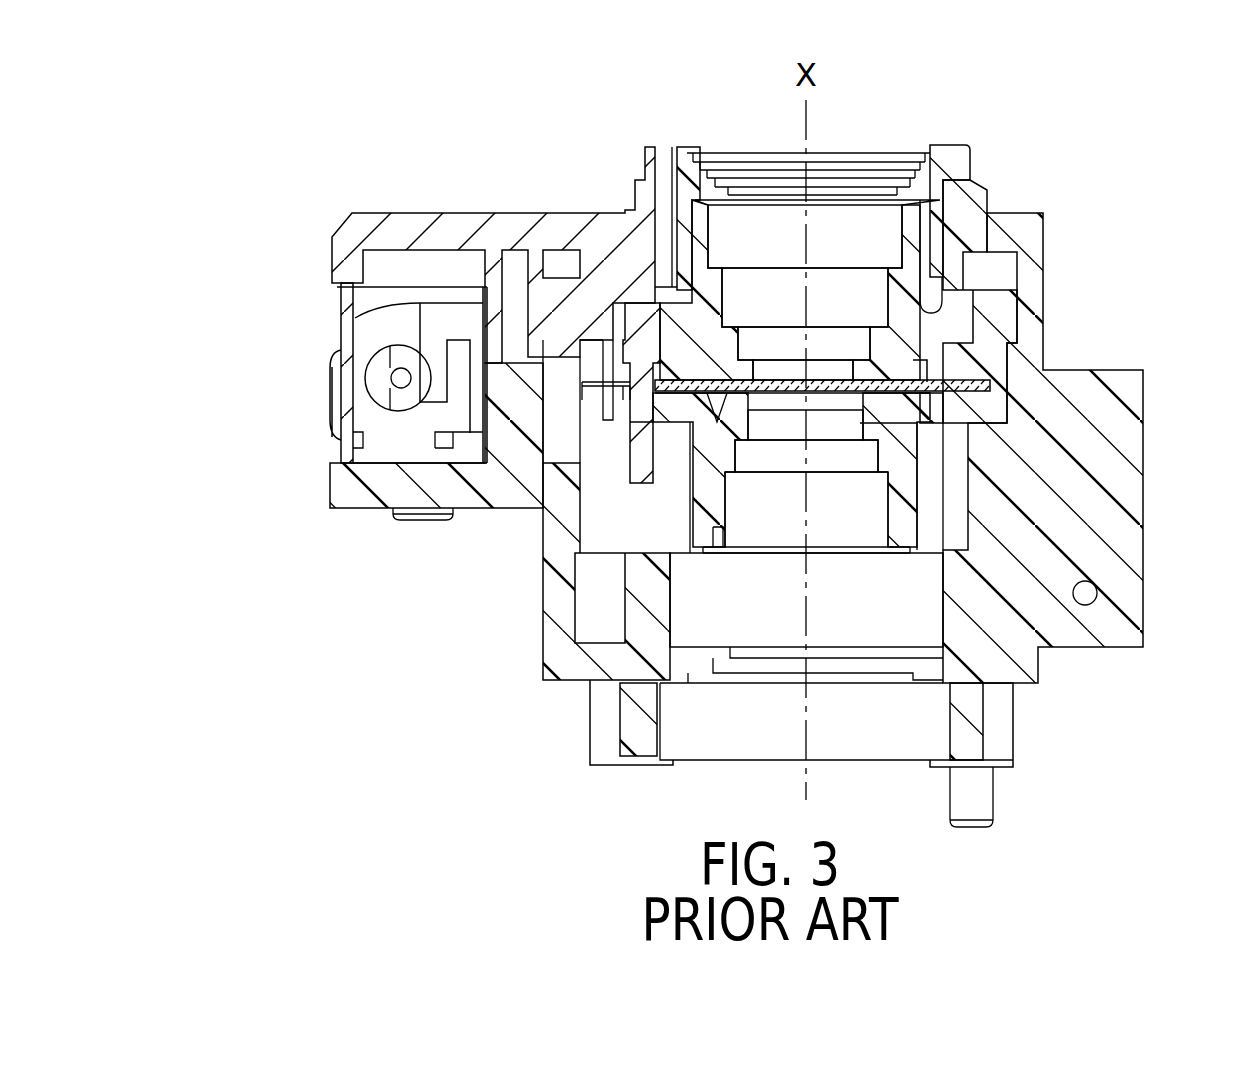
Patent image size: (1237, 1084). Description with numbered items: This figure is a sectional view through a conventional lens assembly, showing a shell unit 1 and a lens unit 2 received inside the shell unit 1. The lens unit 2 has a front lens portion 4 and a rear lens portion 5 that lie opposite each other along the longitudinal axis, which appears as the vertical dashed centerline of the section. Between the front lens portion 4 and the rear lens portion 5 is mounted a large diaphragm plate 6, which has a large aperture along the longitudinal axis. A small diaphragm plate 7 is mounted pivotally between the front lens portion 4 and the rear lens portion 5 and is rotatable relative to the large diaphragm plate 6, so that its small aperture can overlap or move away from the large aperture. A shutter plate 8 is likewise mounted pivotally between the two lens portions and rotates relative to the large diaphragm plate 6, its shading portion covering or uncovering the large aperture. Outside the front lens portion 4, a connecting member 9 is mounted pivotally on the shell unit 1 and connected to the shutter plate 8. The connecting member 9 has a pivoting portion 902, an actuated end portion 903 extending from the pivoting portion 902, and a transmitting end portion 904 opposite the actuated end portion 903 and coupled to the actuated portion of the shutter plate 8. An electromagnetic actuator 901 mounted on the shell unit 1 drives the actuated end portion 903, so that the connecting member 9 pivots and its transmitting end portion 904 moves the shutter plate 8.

The shell unit 1 is at (1046, 322).
The lens unit 2 is at (962, 312).
The front lens portion 4 is at (913, 214).
The rear lens portion 5 is at (910, 525).
The large diaphragm plate 6 is at (907, 399).
The small diaphragm plate 7 is at (814, 402).
The shutter plate 8 is at (591, 376).
The connecting member 9 is at (455, 306).
The electromagnetic actuator 901 is at (329, 383).
The pivoting portion 902 is at (500, 292).
The actuated end portion 903 is at (432, 362).
The transmitting end portion 904 is at (641, 347).